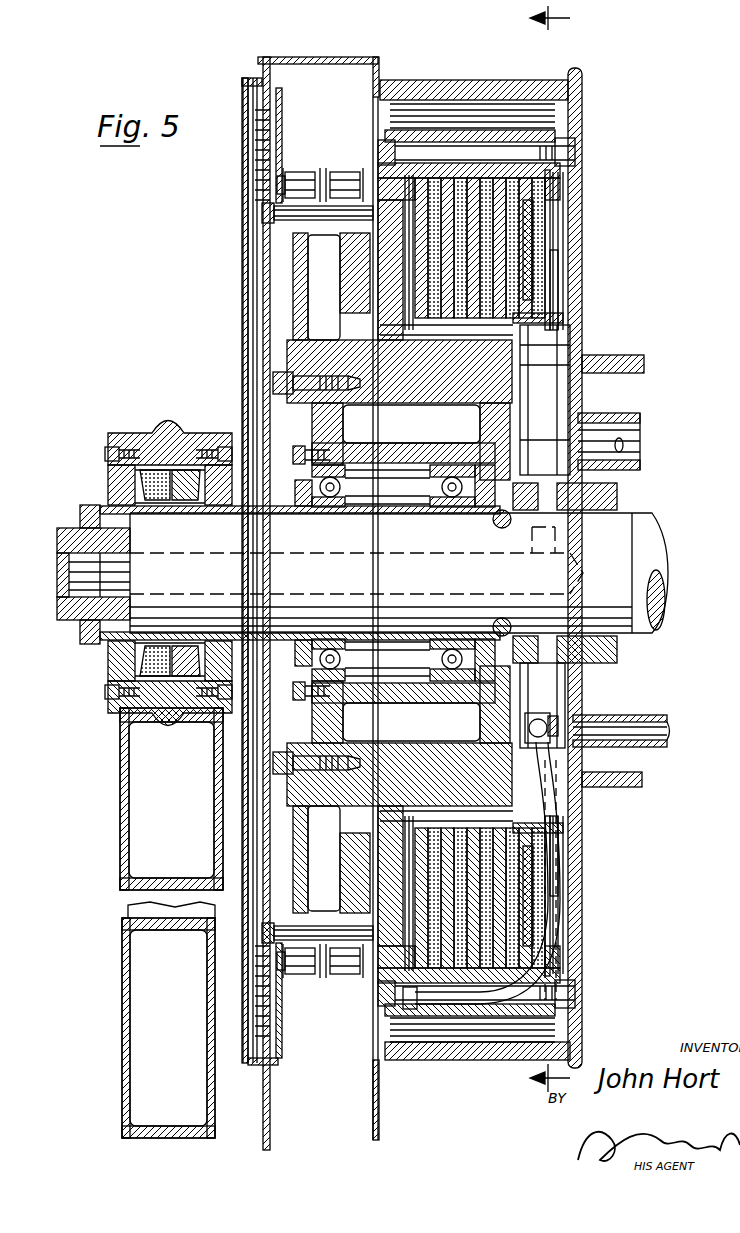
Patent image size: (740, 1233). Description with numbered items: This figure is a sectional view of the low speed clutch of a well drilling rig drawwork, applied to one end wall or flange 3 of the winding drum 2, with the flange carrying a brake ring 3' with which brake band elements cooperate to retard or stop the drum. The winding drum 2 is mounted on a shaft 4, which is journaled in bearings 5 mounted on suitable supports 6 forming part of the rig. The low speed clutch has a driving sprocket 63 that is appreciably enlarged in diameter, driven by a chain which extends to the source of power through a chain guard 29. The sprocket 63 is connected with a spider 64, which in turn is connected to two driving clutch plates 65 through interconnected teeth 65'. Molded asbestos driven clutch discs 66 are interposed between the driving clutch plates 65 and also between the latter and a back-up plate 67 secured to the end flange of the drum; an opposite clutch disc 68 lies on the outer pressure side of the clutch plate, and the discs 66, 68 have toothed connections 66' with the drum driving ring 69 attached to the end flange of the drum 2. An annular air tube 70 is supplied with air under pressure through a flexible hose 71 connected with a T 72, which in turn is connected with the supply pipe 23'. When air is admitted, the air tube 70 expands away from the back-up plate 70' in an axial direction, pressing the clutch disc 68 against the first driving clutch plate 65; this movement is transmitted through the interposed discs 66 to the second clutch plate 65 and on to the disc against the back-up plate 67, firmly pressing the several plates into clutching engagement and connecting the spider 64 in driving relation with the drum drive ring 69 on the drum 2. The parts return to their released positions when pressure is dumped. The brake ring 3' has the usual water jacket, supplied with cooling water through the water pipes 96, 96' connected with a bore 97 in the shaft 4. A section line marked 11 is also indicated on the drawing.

The winding drum 2 is at (619, 790).
The flange 3 is at (495, 568).
The brake ring 3' is at (477, 1065).
The shaft 4 is at (650, 632).
The bearings 5 is at (130, 720).
The supports 6 is at (125, 841).
The section line 11 is at (535, 550).
The supply pipe 23' is at (639, 727).
The chain guard 29 is at (269, 1121).
The driving sprocket 63 is at (345, 176).
The spider 64 is at (503, 363).
The driving clutch plates 65 is at (486, 504).
The interconnected teeth 65' is at (581, 555).
The driven clutch discs 66 is at (512, 507).
The toothed connections 66' is at (595, 573).
The back-up plate 67 is at (537, 282).
The clutch disc 68 is at (520, 190).
The drum driving ring 69 is at (416, 132).
The air tube 70 is at (311, 573).
The back-up plate 70' is at (298, 506).
The flexible hose 71 is at (555, 880).
The T 72 is at (557, 714).
The water pipe 96 is at (604, 568).
The water pipe 96' is at (639, 441).
The bore 97 is at (85, 562).